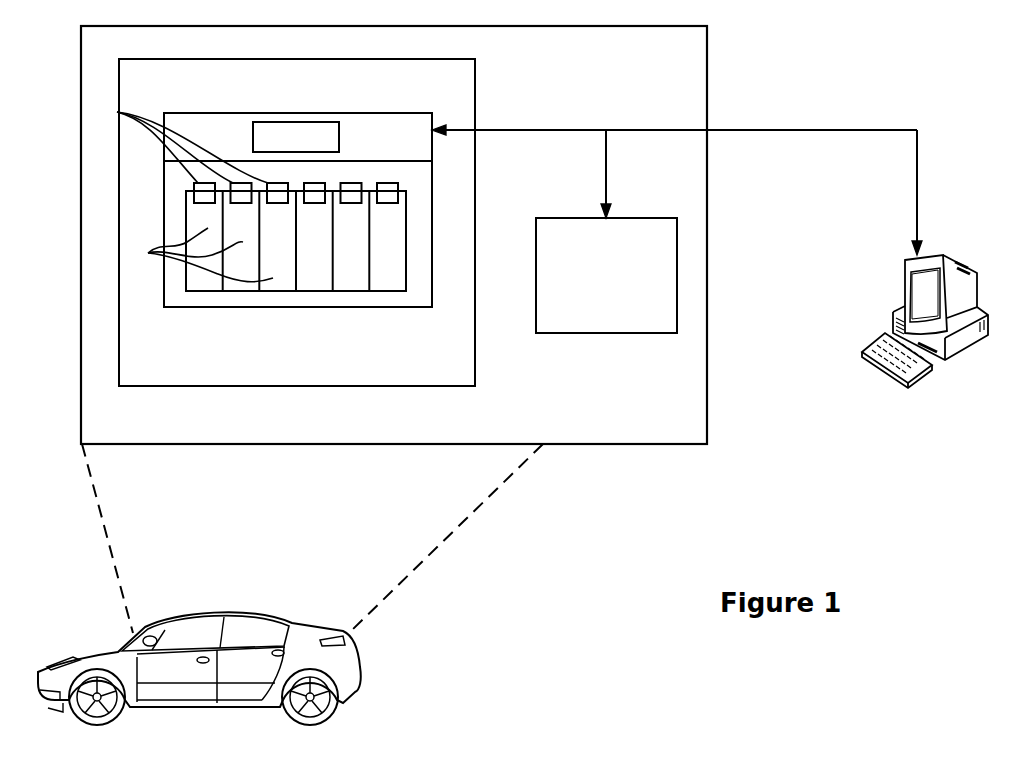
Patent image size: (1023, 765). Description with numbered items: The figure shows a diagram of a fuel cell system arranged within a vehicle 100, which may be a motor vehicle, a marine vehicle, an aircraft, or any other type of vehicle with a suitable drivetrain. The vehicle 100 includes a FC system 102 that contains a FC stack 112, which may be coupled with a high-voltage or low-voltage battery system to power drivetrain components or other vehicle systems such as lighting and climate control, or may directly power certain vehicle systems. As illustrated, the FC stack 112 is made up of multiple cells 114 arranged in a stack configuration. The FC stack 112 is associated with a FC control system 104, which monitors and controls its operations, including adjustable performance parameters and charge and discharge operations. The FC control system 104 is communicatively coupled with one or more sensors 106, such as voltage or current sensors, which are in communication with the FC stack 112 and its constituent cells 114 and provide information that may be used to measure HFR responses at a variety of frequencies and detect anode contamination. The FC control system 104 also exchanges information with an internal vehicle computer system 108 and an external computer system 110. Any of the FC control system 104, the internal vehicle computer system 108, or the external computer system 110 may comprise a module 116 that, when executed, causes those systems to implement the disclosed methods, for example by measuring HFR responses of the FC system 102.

The vehicle 100 is at (112, 640).
The FC system 102 is at (297, 222).
The FC control system 104 is at (298, 210).
The sensors 106 is at (176, 143).
The internal vehicle computer system 108 is at (606, 231).
The external computer system 110 is at (884, 371).
The FC stack 112 is at (298, 172).
The cells 114 is at (197, 255).
The module 116 is at (296, 137).